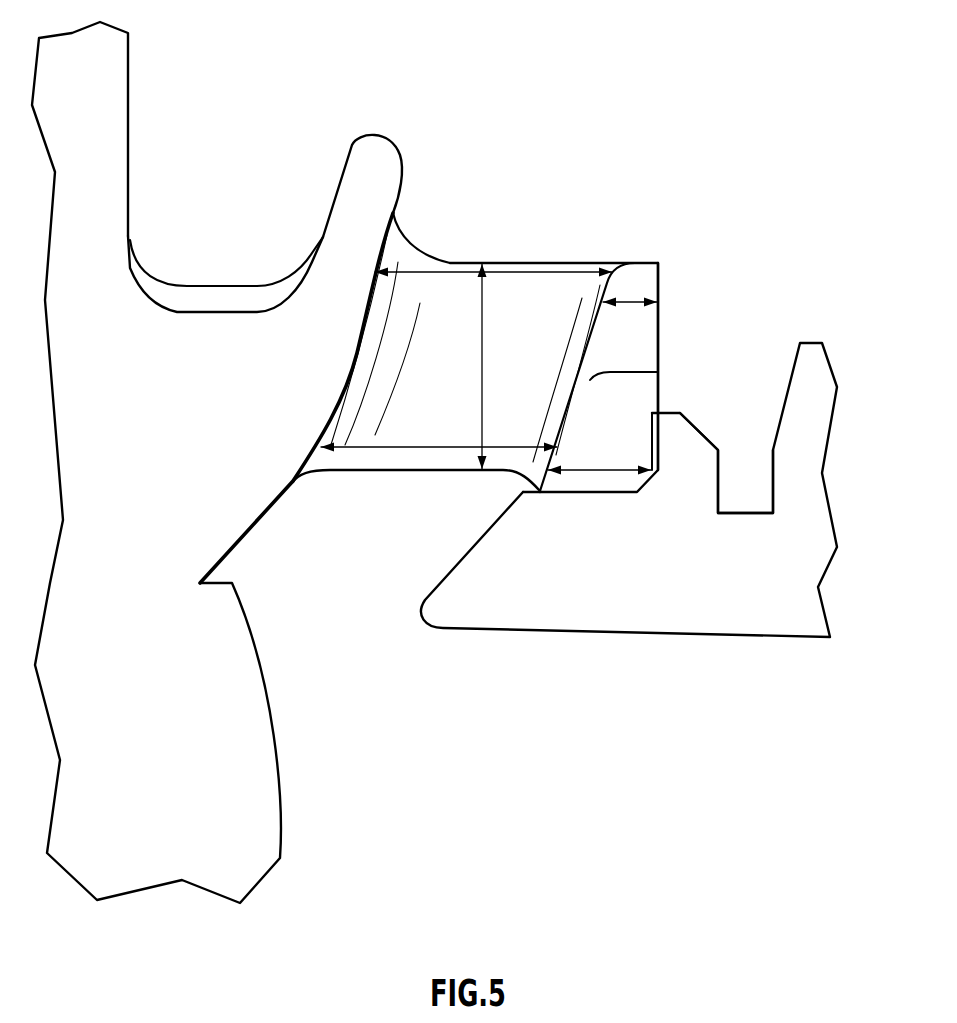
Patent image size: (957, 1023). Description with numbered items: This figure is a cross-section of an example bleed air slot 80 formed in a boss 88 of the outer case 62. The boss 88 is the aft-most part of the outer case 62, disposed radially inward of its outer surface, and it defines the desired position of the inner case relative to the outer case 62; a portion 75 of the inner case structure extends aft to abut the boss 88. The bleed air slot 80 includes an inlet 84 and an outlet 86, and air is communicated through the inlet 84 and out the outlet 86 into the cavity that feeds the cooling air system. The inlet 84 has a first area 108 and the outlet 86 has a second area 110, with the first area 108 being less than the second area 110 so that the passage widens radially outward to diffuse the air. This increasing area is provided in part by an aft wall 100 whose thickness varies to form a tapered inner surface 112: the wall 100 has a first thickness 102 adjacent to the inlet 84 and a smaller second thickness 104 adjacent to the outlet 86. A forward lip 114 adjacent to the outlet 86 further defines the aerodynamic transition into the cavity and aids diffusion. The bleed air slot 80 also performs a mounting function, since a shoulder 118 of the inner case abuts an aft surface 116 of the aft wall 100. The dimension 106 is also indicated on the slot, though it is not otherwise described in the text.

The outer case 62 is at (138, 342).
The portion of inner case structure 75 is at (567, 587).
The bleed air slot 80 is at (806, 114).
The inlet 84 is at (432, 473).
The outlet 86 is at (574, 259).
The boss 88 is at (243, 387).
The aft wall 100 is at (640, 278).
The first thickness 102 is at (618, 468).
The second thickness 104 is at (634, 303).
The flange height 106 is at (483, 358).
The first area 108 is at (376, 448).
The second area 110 is at (430, 268).
The tapered inner surface 112 is at (584, 376).
The forward lip 114 is at (363, 160).
The aft surface 116 is at (661, 353).
The shoulder 118 is at (688, 455).